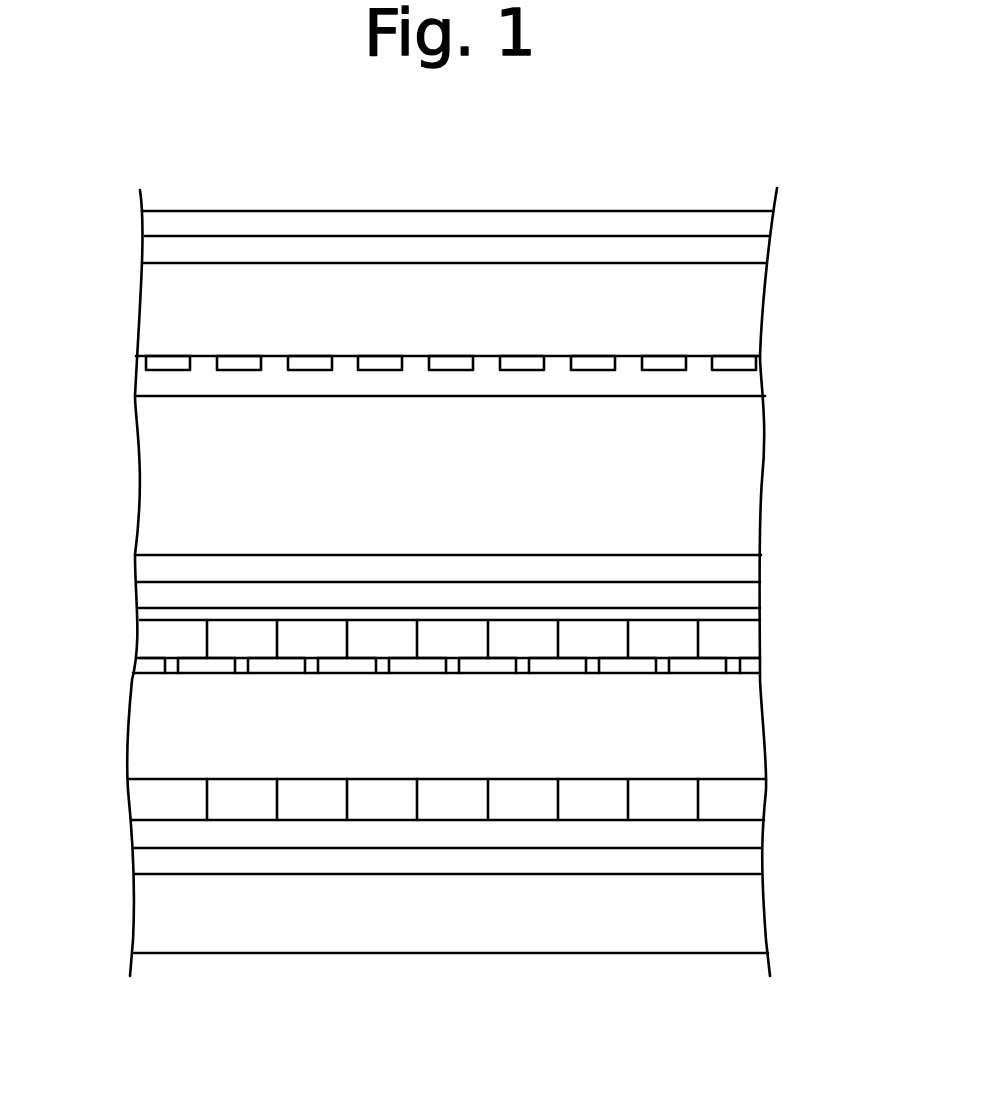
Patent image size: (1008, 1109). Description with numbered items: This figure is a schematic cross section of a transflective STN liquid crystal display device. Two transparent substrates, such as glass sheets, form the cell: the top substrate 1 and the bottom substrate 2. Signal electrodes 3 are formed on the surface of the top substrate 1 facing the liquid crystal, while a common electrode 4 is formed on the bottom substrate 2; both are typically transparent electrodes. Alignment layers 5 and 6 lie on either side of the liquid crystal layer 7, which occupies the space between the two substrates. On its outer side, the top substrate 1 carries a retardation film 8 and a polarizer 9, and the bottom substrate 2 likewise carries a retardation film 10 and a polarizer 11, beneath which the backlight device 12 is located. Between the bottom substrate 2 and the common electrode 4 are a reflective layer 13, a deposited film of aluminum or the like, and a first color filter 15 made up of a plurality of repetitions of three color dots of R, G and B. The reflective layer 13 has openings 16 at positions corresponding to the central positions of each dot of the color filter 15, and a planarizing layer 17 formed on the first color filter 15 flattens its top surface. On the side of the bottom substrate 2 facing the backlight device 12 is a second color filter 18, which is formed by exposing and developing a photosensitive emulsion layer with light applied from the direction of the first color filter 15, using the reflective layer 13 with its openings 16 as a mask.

The top substrate 1 is at (742, 288).
The bottom substrate 2 is at (752, 733).
The signal electrodes 3 is at (668, 354).
The common electrode 4 is at (757, 591).
The alignment layer 5 is at (753, 381).
The alignment layer 6 is at (757, 565).
The liquid crystal layer 7 is at (757, 462).
The retardation film 8 is at (155, 252).
The polarizer 9 is at (152, 224).
The retardation film 10 is at (143, 833).
The polarizer 11 is at (148, 863).
The backlight device 12 is at (748, 913).
The reflective layer 13 is at (218, 672).
The first color filter 15 is at (148, 637).
The openings 16 is at (318, 672).
The planarizing layer 17 is at (757, 612).
The second color filter 18 is at (752, 797).